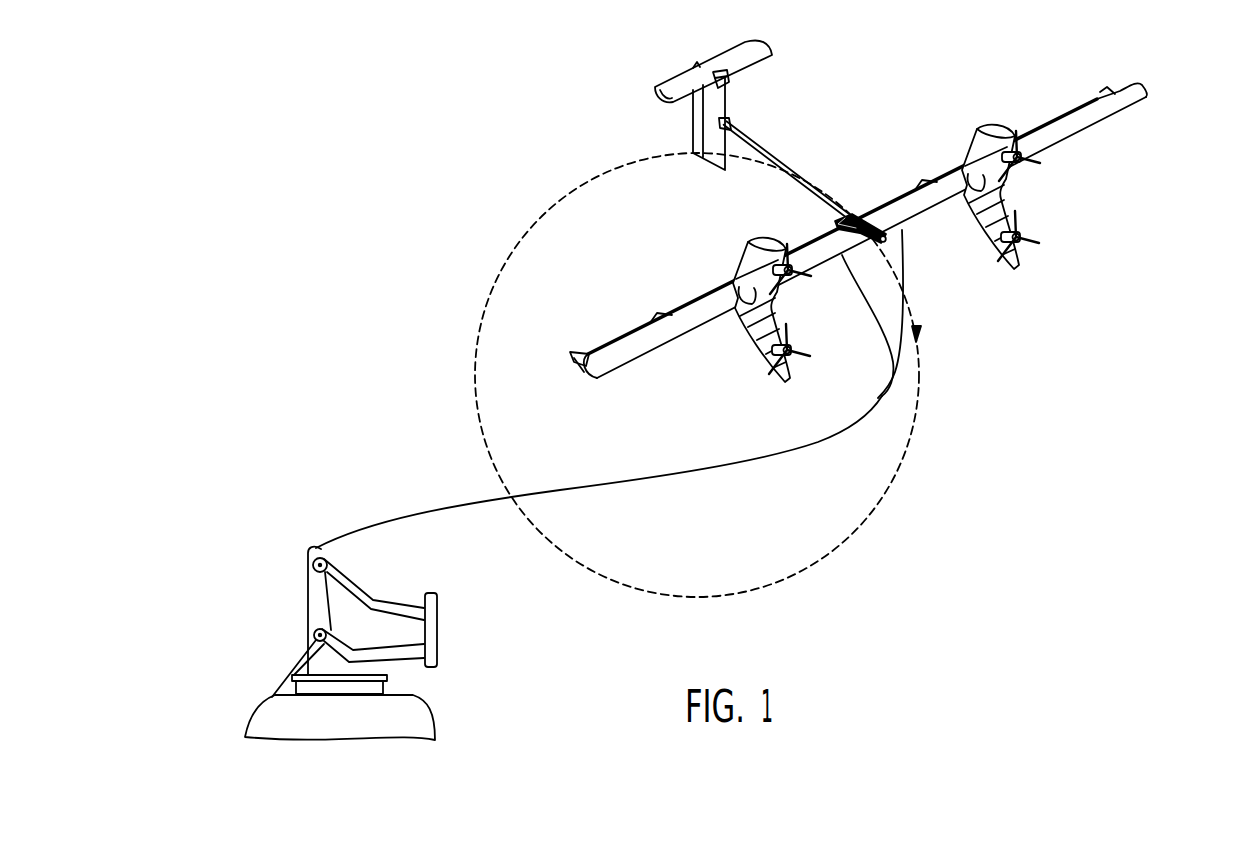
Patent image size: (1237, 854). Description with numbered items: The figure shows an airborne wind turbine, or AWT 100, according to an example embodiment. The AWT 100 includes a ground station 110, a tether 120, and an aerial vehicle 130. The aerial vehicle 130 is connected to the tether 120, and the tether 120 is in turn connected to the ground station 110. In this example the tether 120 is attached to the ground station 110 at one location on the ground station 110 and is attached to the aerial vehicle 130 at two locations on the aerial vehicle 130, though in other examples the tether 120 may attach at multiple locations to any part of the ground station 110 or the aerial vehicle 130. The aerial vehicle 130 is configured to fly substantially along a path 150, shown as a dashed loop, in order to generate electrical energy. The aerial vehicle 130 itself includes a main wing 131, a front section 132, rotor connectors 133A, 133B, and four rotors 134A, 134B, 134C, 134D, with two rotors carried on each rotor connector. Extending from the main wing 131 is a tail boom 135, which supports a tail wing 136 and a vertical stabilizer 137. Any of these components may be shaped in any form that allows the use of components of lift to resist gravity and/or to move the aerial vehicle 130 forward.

The airborne wind turbine 100 is at (314, 204).
The ground station 110 is at (316, 602).
The tether 120 is at (422, 513).
The aerial vehicle 130 is at (1224, 72).
The main wing 131 is at (918, 207).
The front section 132 is at (881, 243).
The rotor connector 133A is at (971, 139).
The rotor connector 133B is at (740, 255).
The rotor 134A is at (998, 177).
The rotor 134B is at (1002, 254).
The rotor 134C is at (772, 288).
The rotor 134D is at (777, 367).
The tail boom 135 is at (782, 160).
The tail wing 136 is at (770, 46).
The vertical stabilizer 137 is at (715, 163).
The path 150 is at (527, 228).